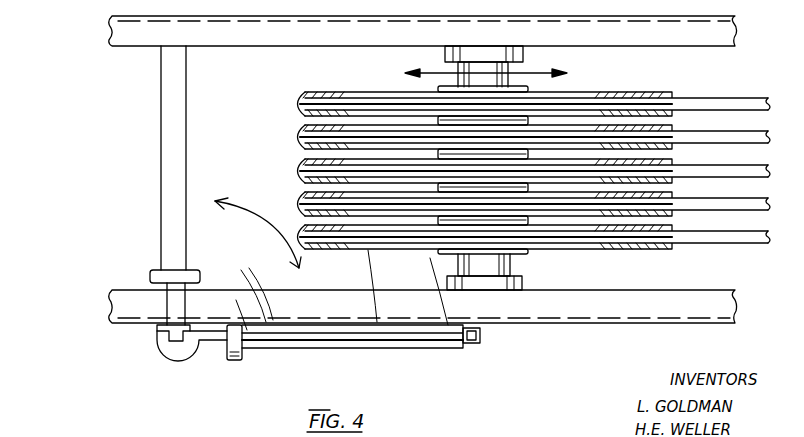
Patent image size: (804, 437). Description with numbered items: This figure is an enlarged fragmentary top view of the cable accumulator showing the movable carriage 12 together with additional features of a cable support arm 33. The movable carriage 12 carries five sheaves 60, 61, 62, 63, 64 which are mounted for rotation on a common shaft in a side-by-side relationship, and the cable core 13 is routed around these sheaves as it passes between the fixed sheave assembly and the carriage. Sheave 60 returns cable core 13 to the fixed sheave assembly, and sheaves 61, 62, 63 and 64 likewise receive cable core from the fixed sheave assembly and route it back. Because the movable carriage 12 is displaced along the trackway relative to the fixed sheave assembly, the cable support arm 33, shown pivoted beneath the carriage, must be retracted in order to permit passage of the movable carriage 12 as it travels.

The movable carriage 12 is at (601, 254).
The cable core 13 is at (534, 172).
The cable support arm 33 is at (360, 348).
The sheave 60 is at (672, 249).
The sheave 61 is at (672, 216).
The sheave 62 is at (672, 183).
The sheave 63 is at (672, 149).
The sheave 64 is at (672, 116).